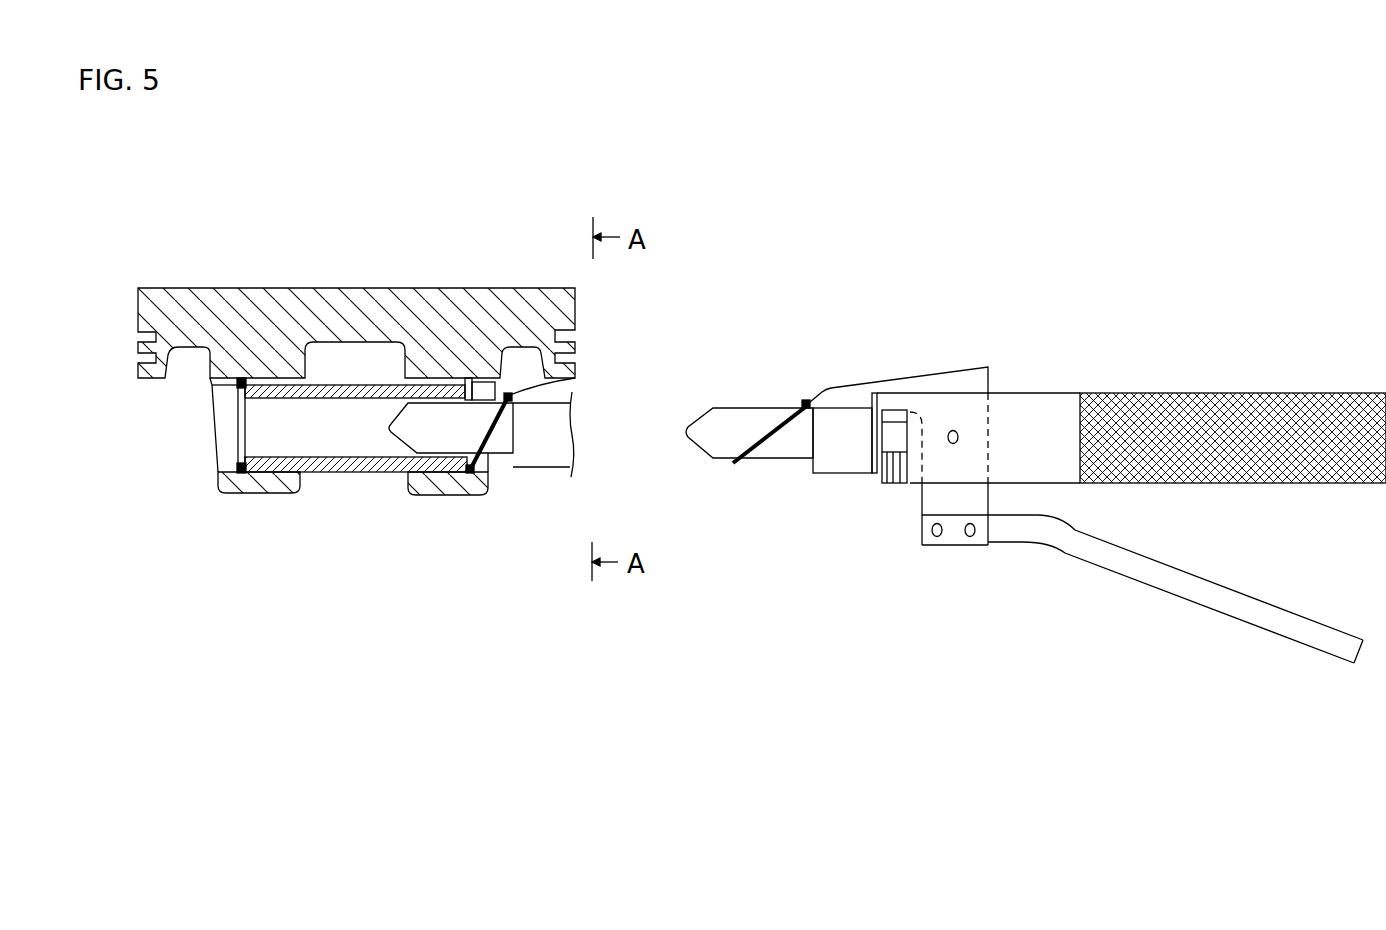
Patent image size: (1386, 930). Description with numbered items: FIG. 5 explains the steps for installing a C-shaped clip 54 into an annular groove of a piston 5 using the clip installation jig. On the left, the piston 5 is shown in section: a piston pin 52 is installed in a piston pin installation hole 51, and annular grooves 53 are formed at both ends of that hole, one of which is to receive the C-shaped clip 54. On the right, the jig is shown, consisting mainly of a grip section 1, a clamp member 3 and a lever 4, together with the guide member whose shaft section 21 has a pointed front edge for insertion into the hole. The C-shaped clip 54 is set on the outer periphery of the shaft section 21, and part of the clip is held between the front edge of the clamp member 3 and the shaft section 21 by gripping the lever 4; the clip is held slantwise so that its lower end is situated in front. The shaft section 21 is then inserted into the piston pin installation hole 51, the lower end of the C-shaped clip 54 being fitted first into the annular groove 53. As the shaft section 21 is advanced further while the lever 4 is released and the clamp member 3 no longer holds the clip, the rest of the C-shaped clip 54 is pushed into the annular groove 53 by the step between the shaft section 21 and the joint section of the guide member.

The grip section 1 is at (1110, 400).
The clamp member 3 is at (955, 378).
The lever 4 is at (1100, 565).
The piston 5 is at (292, 312).
The shaft section 21 is at (438, 432).
The piston pin installation hole 51 is at (438, 380).
The piston pin 52 is at (355, 475).
The annular groove 53 is at (247, 423).
The C-shaped clip 54 is at (240, 467).